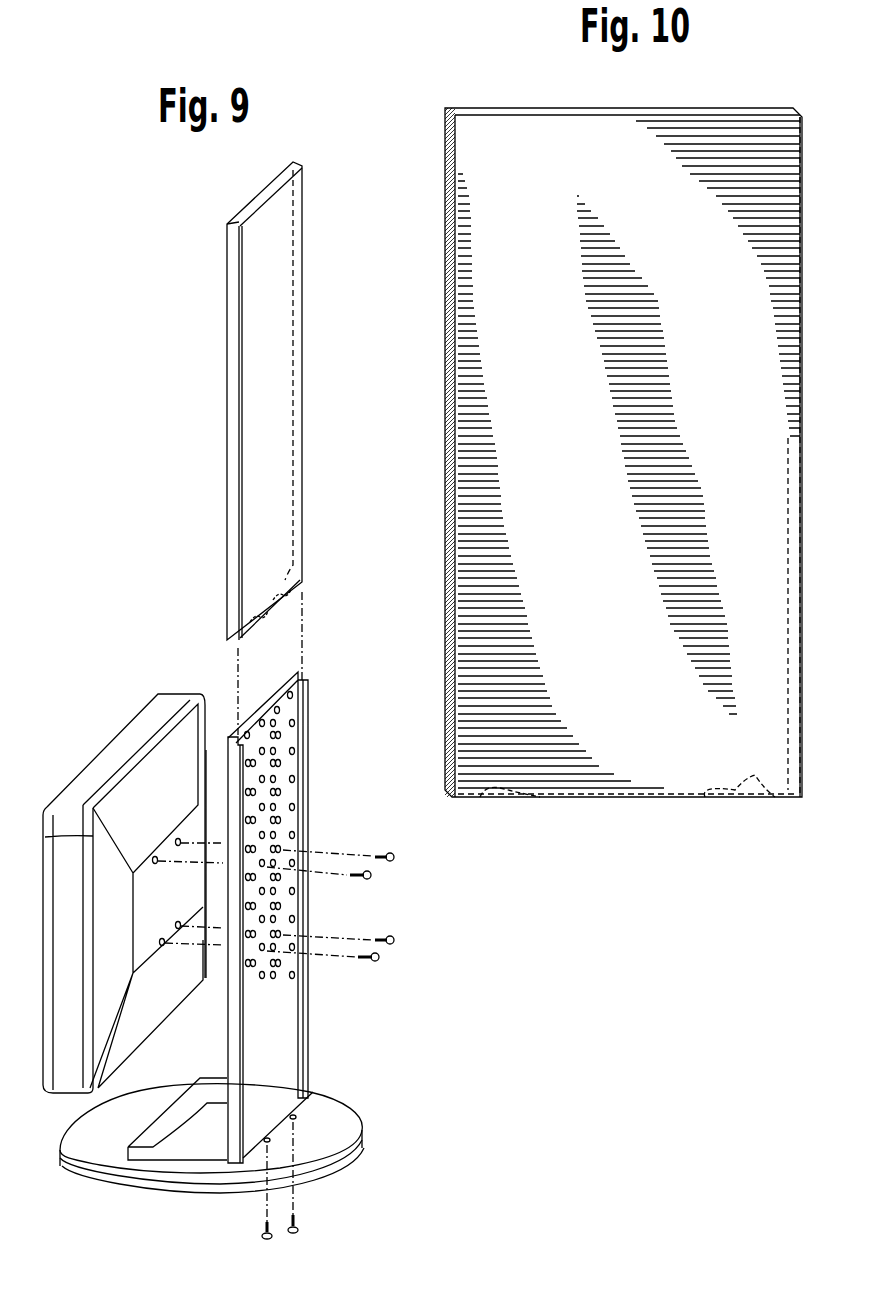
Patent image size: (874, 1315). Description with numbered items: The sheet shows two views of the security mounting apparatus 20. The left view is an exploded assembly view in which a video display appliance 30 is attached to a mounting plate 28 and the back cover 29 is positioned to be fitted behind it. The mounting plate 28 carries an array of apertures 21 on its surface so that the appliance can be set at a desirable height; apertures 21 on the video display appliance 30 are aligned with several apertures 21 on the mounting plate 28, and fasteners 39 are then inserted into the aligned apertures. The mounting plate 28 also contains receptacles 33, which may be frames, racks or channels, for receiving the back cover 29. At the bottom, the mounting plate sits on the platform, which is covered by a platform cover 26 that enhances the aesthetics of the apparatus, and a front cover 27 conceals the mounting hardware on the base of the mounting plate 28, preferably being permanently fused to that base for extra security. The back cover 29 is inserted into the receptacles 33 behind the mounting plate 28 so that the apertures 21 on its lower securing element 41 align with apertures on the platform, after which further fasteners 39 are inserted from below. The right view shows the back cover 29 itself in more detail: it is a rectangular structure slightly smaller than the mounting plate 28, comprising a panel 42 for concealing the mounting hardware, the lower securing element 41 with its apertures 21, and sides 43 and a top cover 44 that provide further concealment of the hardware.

In FIG. 9, the security mounting apparatus 20 is at (138, 182).
In FIG. 9, the apertures 21 is at (295, 560).
In FIG. 10, the apertures 21 is at (760, 795).
In FIG. 9, the platform cover 26 is at (102, 1153).
In FIG. 9, the front cover 27 is at (178, 1127).
In FIG. 9, the mounting plate 28 is at (322, 690).
In FIG. 9, the back cover 29 is at (222, 312).
In FIG. 10, the back cover 29 is at (708, 98).
In FIG. 9, the video display appliance 30 is at (63, 1058).
In FIG. 9, the receptacles 33 is at (250, 1072).
In FIG. 9, the fasteners 39 is at (378, 940).
In FIG. 9, the lower securing element 41 is at (280, 603).
In FIG. 10, the lower securing element 41 is at (636, 802).
In FIG. 9, the panel 42 is at (272, 305).
In FIG. 10, the panel 42 is at (740, 520).
In FIG. 9, the sides 43 is at (306, 207).
In FIG. 10, the sides 43 is at (447, 170).
In FIG. 9, the top cover 44 is at (268, 180).
In FIG. 10, the top cover 44 is at (598, 108).